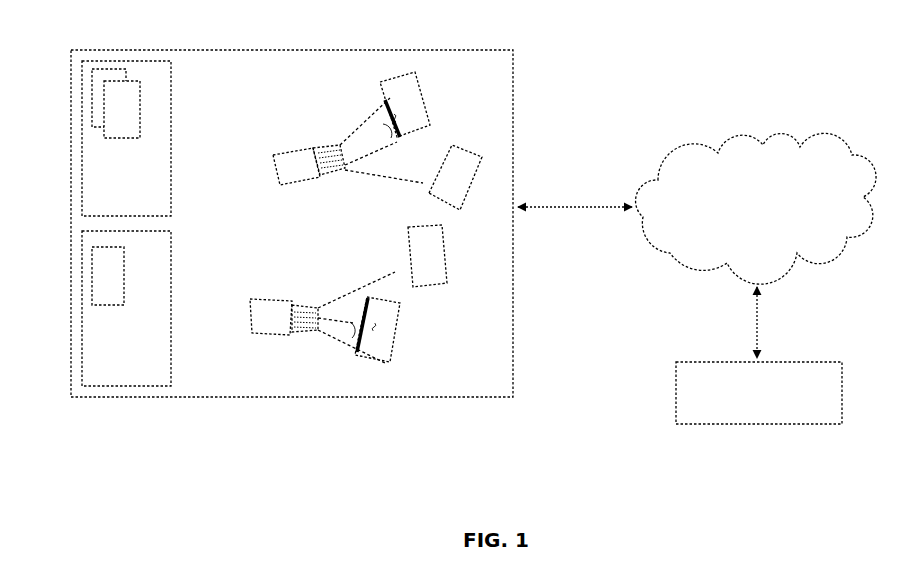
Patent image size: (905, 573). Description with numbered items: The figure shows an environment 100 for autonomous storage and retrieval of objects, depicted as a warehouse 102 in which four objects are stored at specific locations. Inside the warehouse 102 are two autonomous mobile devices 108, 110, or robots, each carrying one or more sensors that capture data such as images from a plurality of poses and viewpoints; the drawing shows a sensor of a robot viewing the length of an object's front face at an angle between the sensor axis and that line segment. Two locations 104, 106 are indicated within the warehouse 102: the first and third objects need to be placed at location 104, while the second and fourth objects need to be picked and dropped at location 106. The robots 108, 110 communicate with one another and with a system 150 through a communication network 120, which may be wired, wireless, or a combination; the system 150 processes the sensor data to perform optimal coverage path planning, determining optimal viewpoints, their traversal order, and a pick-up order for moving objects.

The environment 100 is at (280, 488).
The warehouse 102 is at (404, 49).
The location 104 is at (146, 60).
The location 106 is at (128, 385).
The autonomous mobile device 108 is at (291, 150).
The autonomous mobile device 110 is at (268, 300).
The communication network 120 is at (756, 208).
The system 150 is at (759, 393).